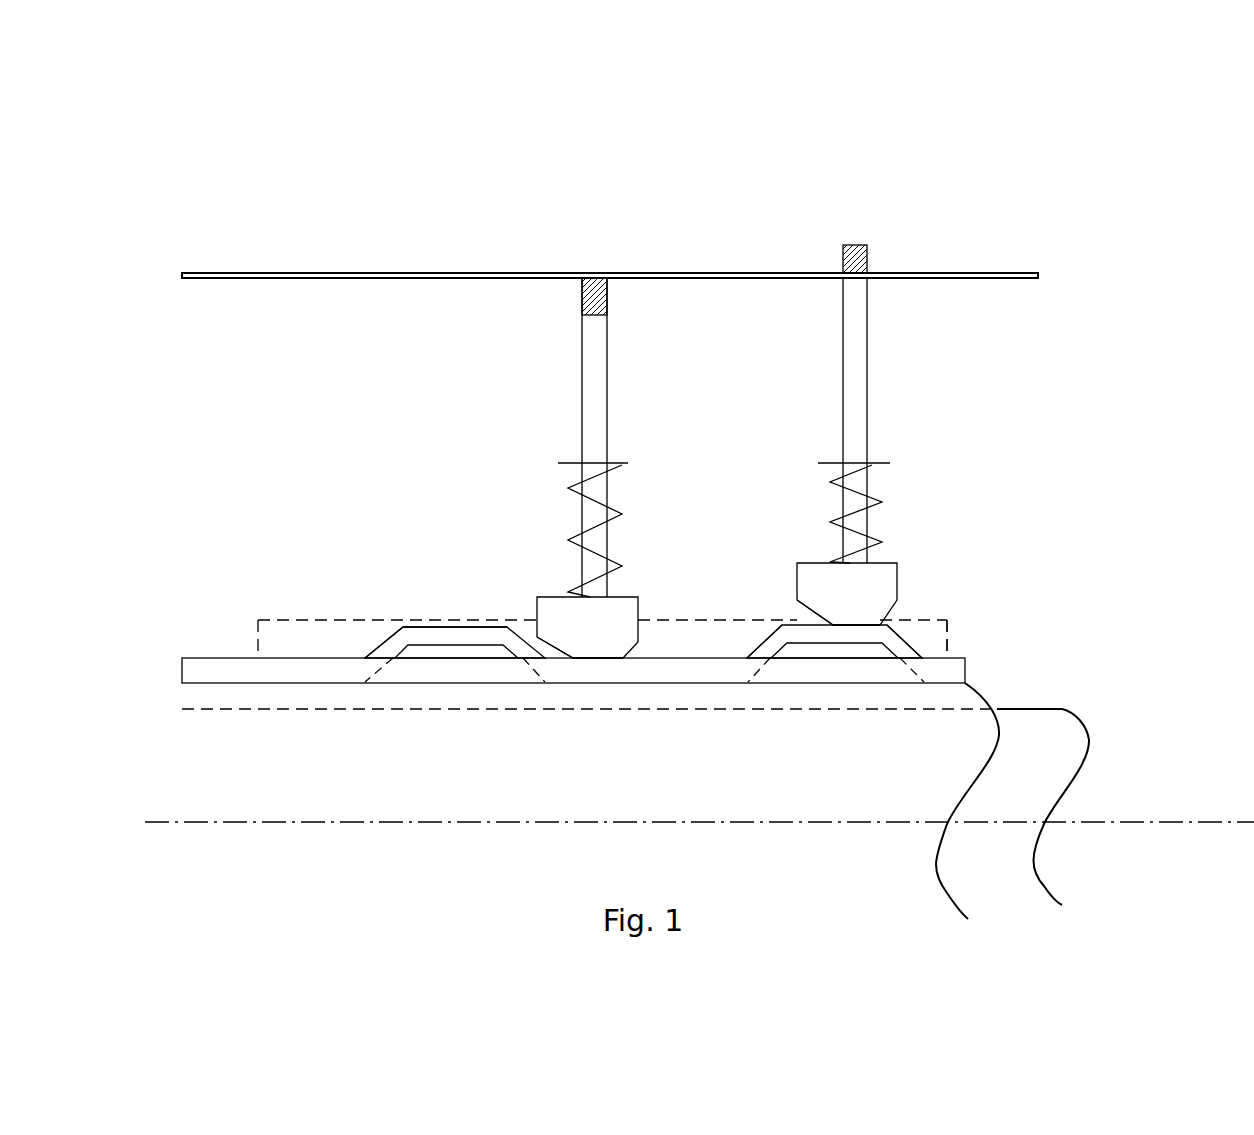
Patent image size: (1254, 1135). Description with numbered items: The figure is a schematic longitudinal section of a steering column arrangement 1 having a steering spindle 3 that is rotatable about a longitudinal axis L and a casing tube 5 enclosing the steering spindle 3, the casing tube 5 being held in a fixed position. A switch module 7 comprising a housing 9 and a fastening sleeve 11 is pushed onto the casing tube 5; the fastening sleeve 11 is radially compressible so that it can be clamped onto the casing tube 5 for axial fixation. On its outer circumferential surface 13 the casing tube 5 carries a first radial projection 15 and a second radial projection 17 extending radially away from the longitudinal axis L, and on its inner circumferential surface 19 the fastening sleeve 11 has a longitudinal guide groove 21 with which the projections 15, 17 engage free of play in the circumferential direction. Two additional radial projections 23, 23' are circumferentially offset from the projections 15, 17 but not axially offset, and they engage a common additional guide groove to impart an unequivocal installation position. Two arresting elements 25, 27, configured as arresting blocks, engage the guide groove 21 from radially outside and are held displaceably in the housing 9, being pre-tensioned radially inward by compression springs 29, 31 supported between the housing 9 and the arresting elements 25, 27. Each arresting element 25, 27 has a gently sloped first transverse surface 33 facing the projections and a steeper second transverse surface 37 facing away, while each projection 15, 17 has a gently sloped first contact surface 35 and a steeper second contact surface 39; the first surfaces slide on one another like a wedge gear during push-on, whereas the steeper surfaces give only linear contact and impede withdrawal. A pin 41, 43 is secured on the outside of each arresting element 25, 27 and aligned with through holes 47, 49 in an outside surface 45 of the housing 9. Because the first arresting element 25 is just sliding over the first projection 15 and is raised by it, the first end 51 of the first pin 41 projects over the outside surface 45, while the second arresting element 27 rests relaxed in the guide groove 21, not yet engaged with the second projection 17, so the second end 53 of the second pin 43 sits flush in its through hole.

The steering column arrangement 1 is at (1132, 148).
The steering spindle 3 is at (1097, 723).
The casing tube 5 is at (973, 683).
The switch module 7 is at (1133, 343).
The housing 9 is at (968, 271).
The fastening sleeve 11 is at (257, 633).
The outer circumferential surface 13 is at (958, 659).
The first radial projection 15 is at (913, 641).
The second radial projection 17 is at (420, 624).
The inner circumferential surface 19 is at (222, 675).
The guide groove 21 is at (310, 636).
The additional radial projection 23 is at (835, 707).
The additional radial projection 23' is at (455, 707).
The first arresting element 25 is at (896, 561).
The second arresting element 27 is at (631, 596).
The compression spring 29 is at (878, 492).
The compression spring 31 is at (617, 513).
The first transverse surface 33 is at (542, 640).
The first contact surface 35 is at (565, 660).
The second transverse surface 37 is at (893, 614).
The second contact surface 39 is at (396, 633).
The first pin 41 is at (858, 340).
The second pin 43 is at (592, 343).
The outside surface 45 is at (676, 272).
The first through hole 47 is at (870, 272).
The second through hole 49 is at (595, 277).
The first end 51 is at (853, 252).
The second end 53 is at (607, 290).
The longitudinal axis L is at (1208, 821).